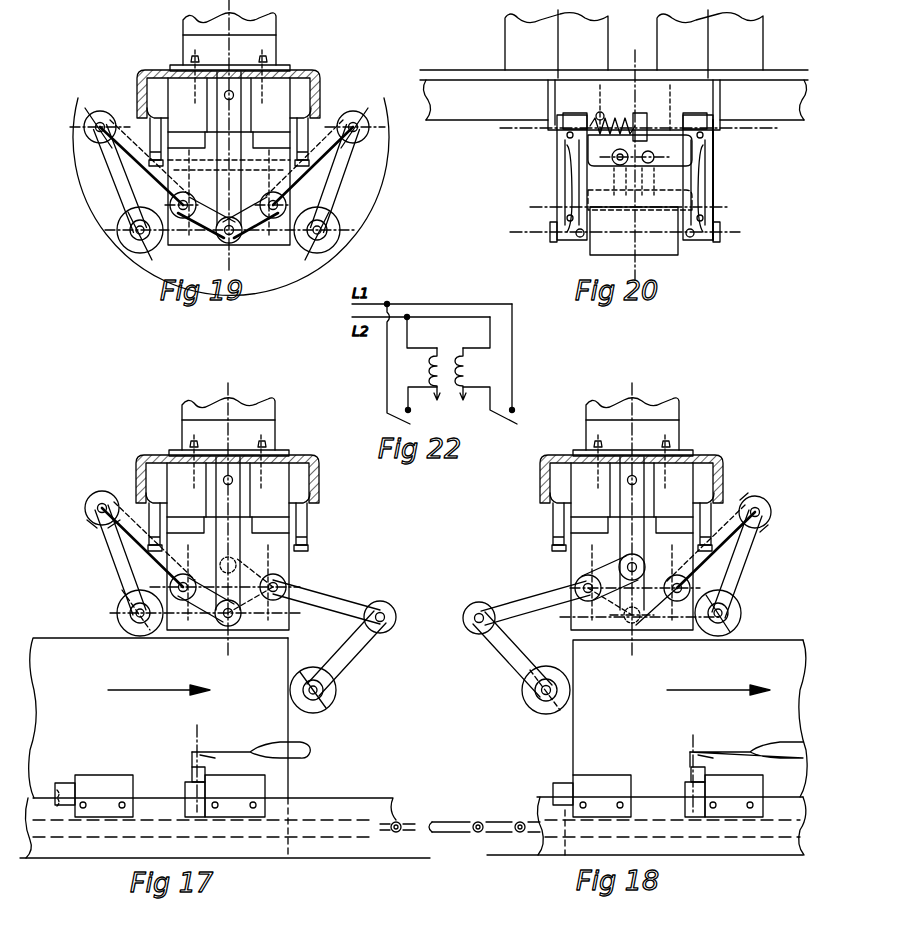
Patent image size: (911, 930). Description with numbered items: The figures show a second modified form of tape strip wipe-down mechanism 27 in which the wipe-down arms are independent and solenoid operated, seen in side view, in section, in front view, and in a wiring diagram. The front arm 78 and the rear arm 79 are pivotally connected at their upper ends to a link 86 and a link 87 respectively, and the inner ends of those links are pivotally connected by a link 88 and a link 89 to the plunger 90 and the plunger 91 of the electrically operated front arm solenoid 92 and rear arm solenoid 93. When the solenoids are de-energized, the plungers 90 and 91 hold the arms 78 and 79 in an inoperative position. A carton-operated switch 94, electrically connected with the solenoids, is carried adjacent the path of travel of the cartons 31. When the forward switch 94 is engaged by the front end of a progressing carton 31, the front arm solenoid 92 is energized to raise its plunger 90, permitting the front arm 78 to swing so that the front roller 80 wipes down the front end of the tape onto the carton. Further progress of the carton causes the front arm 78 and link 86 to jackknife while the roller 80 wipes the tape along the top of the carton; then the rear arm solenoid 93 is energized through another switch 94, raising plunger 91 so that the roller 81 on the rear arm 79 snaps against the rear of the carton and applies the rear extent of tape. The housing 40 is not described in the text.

In FIG. 19, the tape strip wipe-down mechanism 27 is at (156, 174).
In FIG. 20, the tape strip wipe-down mechanism 27 is at (724, 201).
In FIG. 17, the tape strip wipe-down mechanism 27 is at (158, 564).
In FIG. 18, the tape strip wipe-down mechanism 27 is at (560, 562).
In FIG. 17, the carton 31 is at (72, 700).
In FIG. 18, the carton 31 is at (622, 700).
In FIG. 19, the head housing 40 is at (228, 118).
In FIG. 20, the head housing 40 is at (735, 90).
In FIG. 17, the head housing 40 is at (227, 503).
In FIG. 18, the head housing 40 is at (631, 503).
In FIG. 19, the front arm 78 is at (344, 193).
In FIG. 20, the front arm 78 is at (582, 184).
In FIG. 17, the front arm 78 is at (370, 660).
In FIG. 18, the front arm 78 is at (742, 564).
In FIG. 19, the rear arm 79 is at (116, 198).
In FIG. 17, the rear arm 79 is at (106, 559).
In FIG. 18, the rear arm 79 is at (502, 668).
In FIG. 19, the front roller 80 is at (331, 246).
In FIG. 20, the front roller 80 is at (680, 250).
In FIG. 17, the front roller 80 is at (350, 702).
In FIG. 18, the front roller 80 is at (744, 617).
In FIG. 19, the roller 81 is at (126, 247).
In FIG. 17, the roller 81 is at (114, 613).
In FIG. 18, the roller 81 is at (532, 708).
In FIG. 19, the link 86 is at (341, 115).
In FIG. 20, the link 86 is at (556, 160).
In FIG. 17, the link 86 is at (318, 590).
In FIG. 18, the link 86 is at (740, 508).
In FIG. 19, the link 87 is at (124, 110).
In FIG. 17, the link 87 is at (124, 496).
In FIG. 18, the link 87 is at (532, 592).
In FIG. 19, the link 88 is at (244, 242).
In FIG. 17, the link 88 is at (256, 560).
In FIG. 18, the link 88 is at (668, 576).
In FIG. 19, the link 89 is at (215, 244).
In FIG. 17, the link 89 is at (206, 610).
In FIG. 18, the link 89 is at (606, 560).
In FIG. 20, the plunger 90 is at (694, 90).
In FIG. 18, the plunger 90 is at (616, 617).
In FIG. 19, the plunger 91 is at (228, 181).
In FIG. 20, the plunger 91 is at (582, 92).
In FIG. 17, the plunger 91 is at (218, 542).
In FIG. 18, the plunger 91 is at (640, 544).
In FIG. 19, the front arm solenoid 92 is at (248, 59).
In FIG. 20, the front arm solenoid 92 is at (700, 36).
In FIG. 22, the front arm solenoid 92 is at (467, 366).
In FIG. 17, the front arm solenoid 92 is at (247, 444).
In FIG. 18, the front arm solenoid 92 is at (651, 444).
In FIG. 20, the rear arm solenoid 93 is at (548, 34).
In FIG. 22, the rear arm solenoid 93 is at (432, 366).
In FIG. 22, the carton-operated switch 94 is at (532, 412).
In FIG. 17, the carton-operated switch 94 is at (244, 750).
In FIG. 18, the carton-operated switch 94 is at (740, 752).